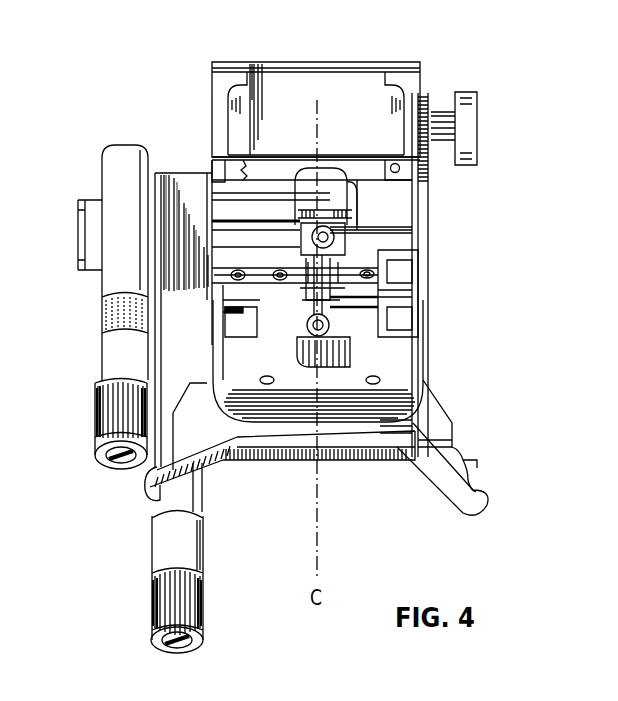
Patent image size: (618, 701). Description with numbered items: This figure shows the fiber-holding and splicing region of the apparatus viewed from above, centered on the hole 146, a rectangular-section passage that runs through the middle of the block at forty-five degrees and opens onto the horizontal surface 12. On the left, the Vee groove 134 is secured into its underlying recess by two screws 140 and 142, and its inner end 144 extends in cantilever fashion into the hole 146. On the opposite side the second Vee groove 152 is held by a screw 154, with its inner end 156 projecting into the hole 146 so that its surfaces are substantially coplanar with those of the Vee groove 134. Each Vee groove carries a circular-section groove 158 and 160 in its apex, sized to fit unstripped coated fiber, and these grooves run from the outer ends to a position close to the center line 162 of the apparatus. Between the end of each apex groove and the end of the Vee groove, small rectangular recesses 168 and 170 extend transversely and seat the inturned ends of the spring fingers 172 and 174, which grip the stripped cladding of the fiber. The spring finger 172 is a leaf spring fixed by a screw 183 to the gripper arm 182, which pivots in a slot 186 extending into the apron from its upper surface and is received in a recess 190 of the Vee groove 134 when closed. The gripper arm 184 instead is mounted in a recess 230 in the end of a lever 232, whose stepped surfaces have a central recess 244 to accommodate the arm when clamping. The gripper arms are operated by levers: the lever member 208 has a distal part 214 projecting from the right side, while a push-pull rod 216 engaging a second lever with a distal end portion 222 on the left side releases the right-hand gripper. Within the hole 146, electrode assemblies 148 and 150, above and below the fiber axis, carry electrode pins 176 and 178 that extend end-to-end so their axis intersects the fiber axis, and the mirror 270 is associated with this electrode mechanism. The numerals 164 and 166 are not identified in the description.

The horizontal surface 12 is at (443, 398).
The Vee groove 134 is at (137, 147).
The screw 140 is at (213, 283).
The screw 142 is at (213, 285).
The inner end 144 is at (287, 265).
The hole 146 is at (343, 230).
The electrode assembly 148 is at (350, 265).
The electrode assembly 150 is at (410, 378).
The second Vee groove 152 is at (400, 259).
The screw 154 is at (392, 277).
The inner end 156 is at (367, 265).
The groove 158 is at (230, 140).
The groove 160 is at (350, 267).
The center line 162 is at (317, 520).
The spindle 164 is at (222, 310).
The plate 166 is at (383, 290).
The rectangular recess 168 is at (312, 225).
The rectangular recess 170 is at (343, 264).
The spring finger 172 is at (227, 460).
The spring finger 174 is at (367, 347).
The electrode pin 176 is at (320, 215).
The electrode pin 178 is at (318, 350).
The gripper arm 182 is at (243, 328).
The screw 183 is at (240, 323).
The gripper arm 184 is at (413, 322).
The slot 186 is at (243, 332).
The recess 190 is at (248, 262).
The lever member 208 is at (390, 447).
The distal part 214 is at (472, 457).
The push-pull rod 216 is at (435, 426).
The distal end portion 222 is at (153, 497).
The recess 230 is at (412, 317).
The lever 232 is at (420, 176).
The central recess 244 is at (407, 267).
The mirror 270 is at (330, 210).